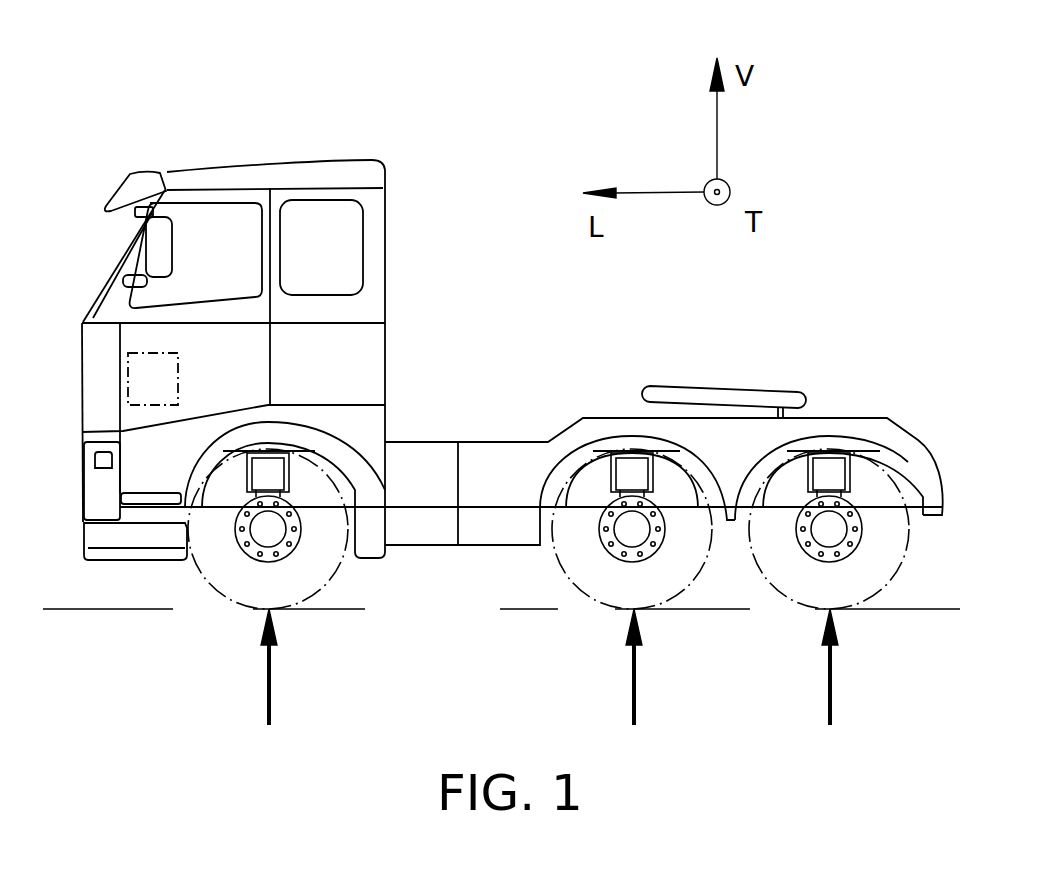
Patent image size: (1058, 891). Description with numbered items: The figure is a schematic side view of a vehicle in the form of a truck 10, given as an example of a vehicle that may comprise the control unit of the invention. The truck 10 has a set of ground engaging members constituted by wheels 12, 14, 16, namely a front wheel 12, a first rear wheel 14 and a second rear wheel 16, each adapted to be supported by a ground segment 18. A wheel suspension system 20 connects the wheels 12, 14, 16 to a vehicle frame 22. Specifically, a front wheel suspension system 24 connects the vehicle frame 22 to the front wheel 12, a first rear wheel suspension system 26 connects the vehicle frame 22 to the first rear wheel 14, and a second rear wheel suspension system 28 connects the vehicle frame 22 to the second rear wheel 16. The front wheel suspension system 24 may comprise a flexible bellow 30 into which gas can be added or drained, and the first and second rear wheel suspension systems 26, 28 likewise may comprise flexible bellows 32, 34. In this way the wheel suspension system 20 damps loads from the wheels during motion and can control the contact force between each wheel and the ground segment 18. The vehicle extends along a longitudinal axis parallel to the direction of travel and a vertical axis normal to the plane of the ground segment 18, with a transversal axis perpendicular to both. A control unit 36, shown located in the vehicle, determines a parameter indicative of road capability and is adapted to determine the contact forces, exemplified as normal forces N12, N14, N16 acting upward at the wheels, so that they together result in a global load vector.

The truck 10 is at (495, 67).
The front wheel 12 is at (328, 478).
The first rear wheel 14 is at (695, 456).
The second rear wheel 16 is at (888, 460).
The ground segment 18 is at (127, 610).
The wheel suspension system 20 is at (288, 565).
The vehicle frame 22 is at (343, 470).
The front wheel suspension system 24 is at (303, 496).
The first rear wheel suspension system 26 is at (665, 492).
The second rear wheel suspension system 28 is at (862, 492).
The flexible bellow 30 is at (267, 474).
The flexible bellow 32 is at (631, 474).
The flexible bellow 34 is at (827, 474).
The control unit 36 is at (128, 352).
The contact force N12 is at (265, 685).
The normal force on first rear axle N14 is at (628, 685).
The contact force N16 is at (825, 685).